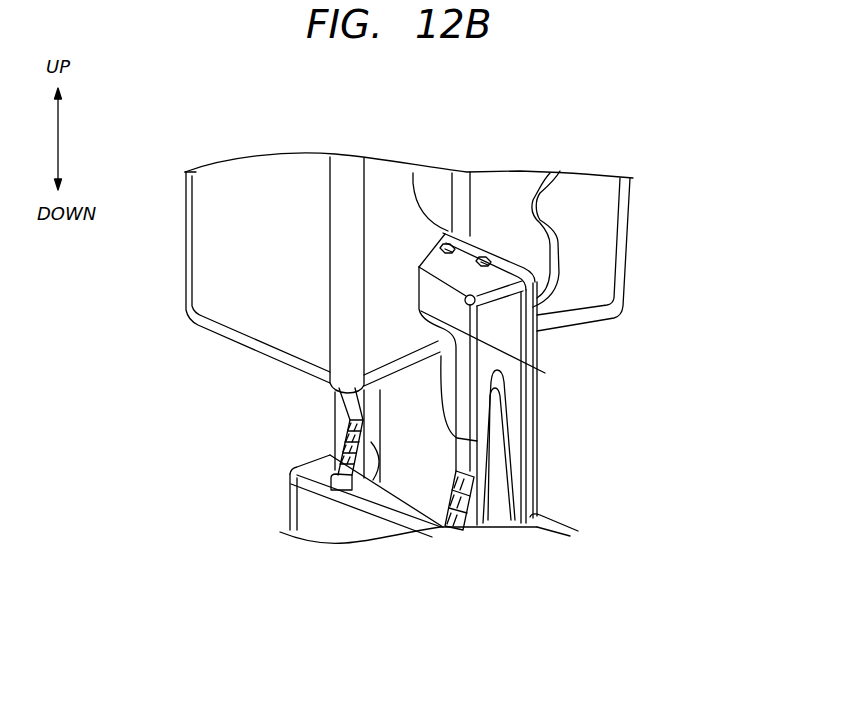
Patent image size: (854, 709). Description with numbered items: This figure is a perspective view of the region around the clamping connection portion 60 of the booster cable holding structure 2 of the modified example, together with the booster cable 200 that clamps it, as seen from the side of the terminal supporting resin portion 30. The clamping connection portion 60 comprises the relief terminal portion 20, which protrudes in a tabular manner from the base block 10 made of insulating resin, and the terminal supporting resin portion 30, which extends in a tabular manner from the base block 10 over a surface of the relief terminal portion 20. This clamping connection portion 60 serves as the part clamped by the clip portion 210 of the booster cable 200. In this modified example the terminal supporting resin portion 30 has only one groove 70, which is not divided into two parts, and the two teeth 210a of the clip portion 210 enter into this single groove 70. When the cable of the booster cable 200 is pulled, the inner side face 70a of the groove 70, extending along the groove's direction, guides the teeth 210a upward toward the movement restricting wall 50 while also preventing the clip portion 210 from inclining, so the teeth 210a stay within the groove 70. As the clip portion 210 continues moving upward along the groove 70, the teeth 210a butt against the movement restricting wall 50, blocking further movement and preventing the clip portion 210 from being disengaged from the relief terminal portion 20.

The booster cable holding structure 2 is at (484, 200).
The base block 10 is at (281, 521).
The relief terminal portion 20 is at (503, 407).
The terminal supporting resin portion 30 is at (376, 425).
The movement restricting wall 50 is at (506, 344).
The clamping connection portion 60 is at (511, 249).
The groove 70 is at (403, 493).
The inner side face 70a is at (331, 470).
The booster cable 200 is at (270, 212).
The clip portion 210 is at (231, 277).
The teeth 210a is at (482, 437).